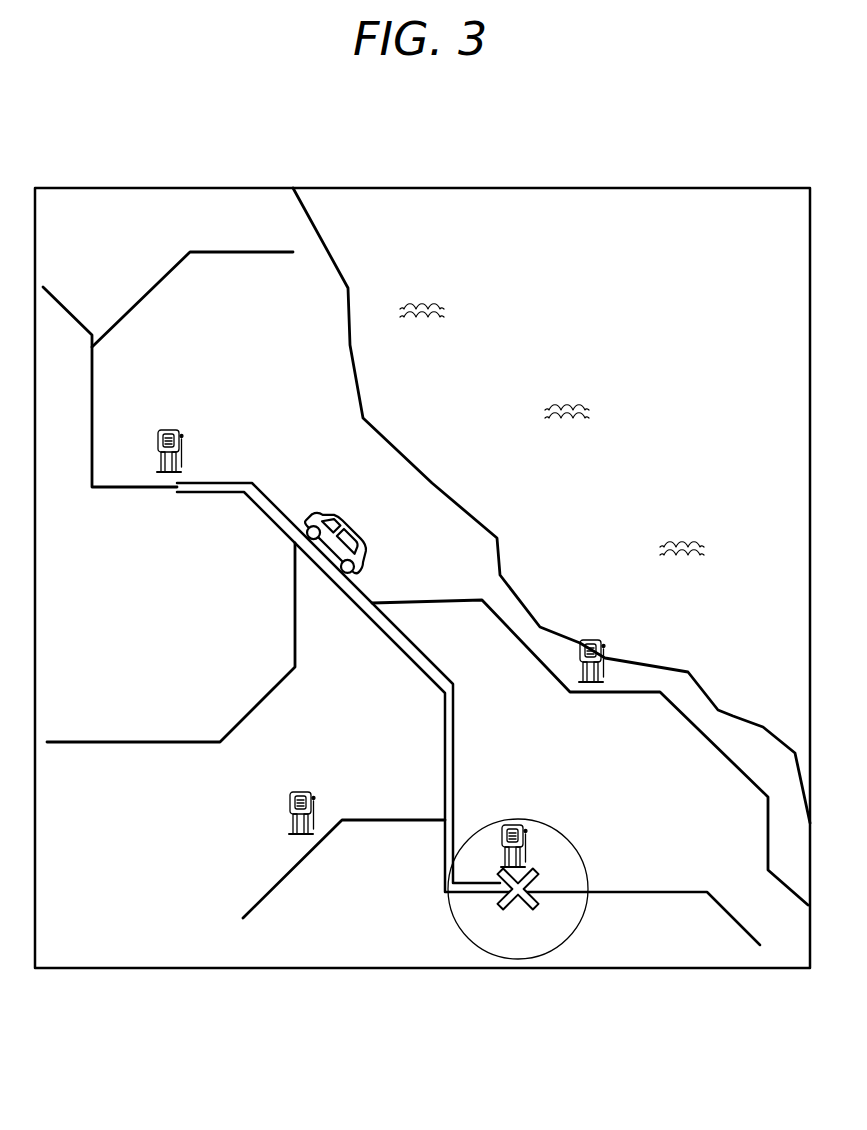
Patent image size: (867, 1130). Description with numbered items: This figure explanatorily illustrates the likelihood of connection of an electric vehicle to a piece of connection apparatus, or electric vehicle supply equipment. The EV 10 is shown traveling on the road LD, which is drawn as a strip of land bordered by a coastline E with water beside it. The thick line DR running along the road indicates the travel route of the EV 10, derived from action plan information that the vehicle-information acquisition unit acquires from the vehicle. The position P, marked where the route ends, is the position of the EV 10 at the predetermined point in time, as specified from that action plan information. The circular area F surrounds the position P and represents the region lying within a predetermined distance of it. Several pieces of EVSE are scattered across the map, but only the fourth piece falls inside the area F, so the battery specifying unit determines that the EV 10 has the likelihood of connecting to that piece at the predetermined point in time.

The EV 10 is at (338, 512).
The road LD is at (92, 356).
The coastline E is at (355, 370).
The travel route DR is at (453, 718).
The position P is at (537, 875).
The area F is at (583, 917).